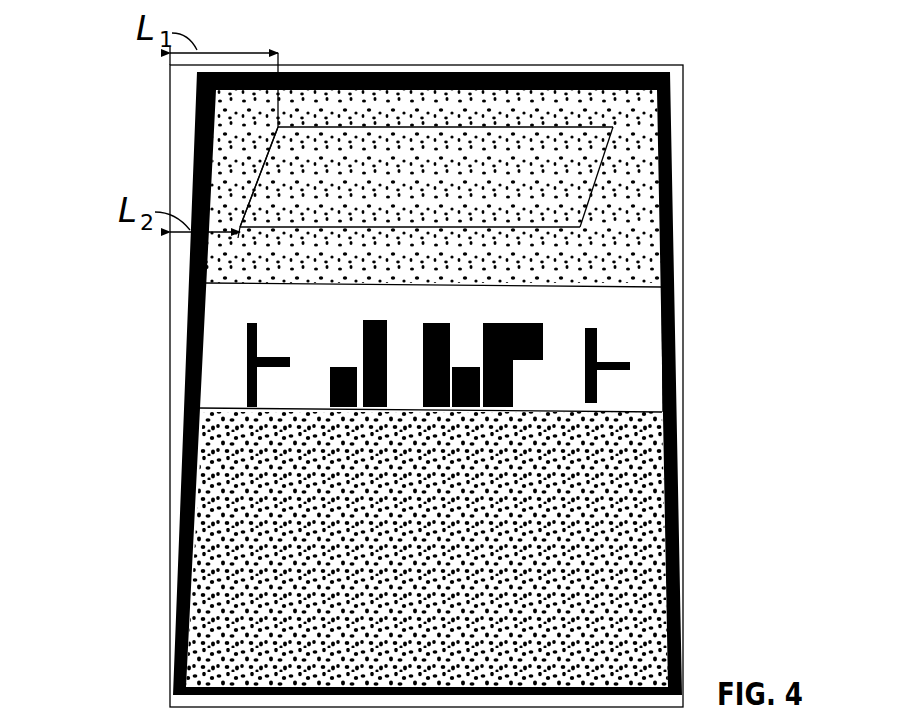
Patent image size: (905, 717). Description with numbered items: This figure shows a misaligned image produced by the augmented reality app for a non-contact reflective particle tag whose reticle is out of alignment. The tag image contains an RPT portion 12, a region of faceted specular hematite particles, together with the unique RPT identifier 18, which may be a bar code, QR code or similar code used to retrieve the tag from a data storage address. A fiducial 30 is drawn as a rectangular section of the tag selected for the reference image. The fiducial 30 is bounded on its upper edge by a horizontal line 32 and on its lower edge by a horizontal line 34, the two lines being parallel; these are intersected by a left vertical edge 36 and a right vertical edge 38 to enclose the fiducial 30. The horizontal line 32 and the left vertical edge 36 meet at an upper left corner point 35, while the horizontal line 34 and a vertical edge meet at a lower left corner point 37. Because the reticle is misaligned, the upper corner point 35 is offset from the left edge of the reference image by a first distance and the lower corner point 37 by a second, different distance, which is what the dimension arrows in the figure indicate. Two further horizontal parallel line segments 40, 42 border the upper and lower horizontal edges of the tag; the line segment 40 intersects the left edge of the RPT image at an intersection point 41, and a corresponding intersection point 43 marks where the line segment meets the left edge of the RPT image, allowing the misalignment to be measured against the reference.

The RPT portion 12 is at (580, 180).
The RPT identifier 18 is at (622, 376).
The fiducial 30 is at (528, 170).
The horizontal line 32 is at (477, 127).
The horizontal line 34 is at (577, 227).
The upper left corner point 35 is at (278, 125).
The left vertical edge 36 is at (263, 160).
The lower left corner point 37 is at (238, 225).
The right vertical edge 38 is at (613, 128).
The horizontal parallel line segment 40 is at (662, 287).
The intersection point 41 is at (197, 408).
The horizontal parallel line segment 42 is at (665, 412).
The intersection point 43 is at (203, 283).